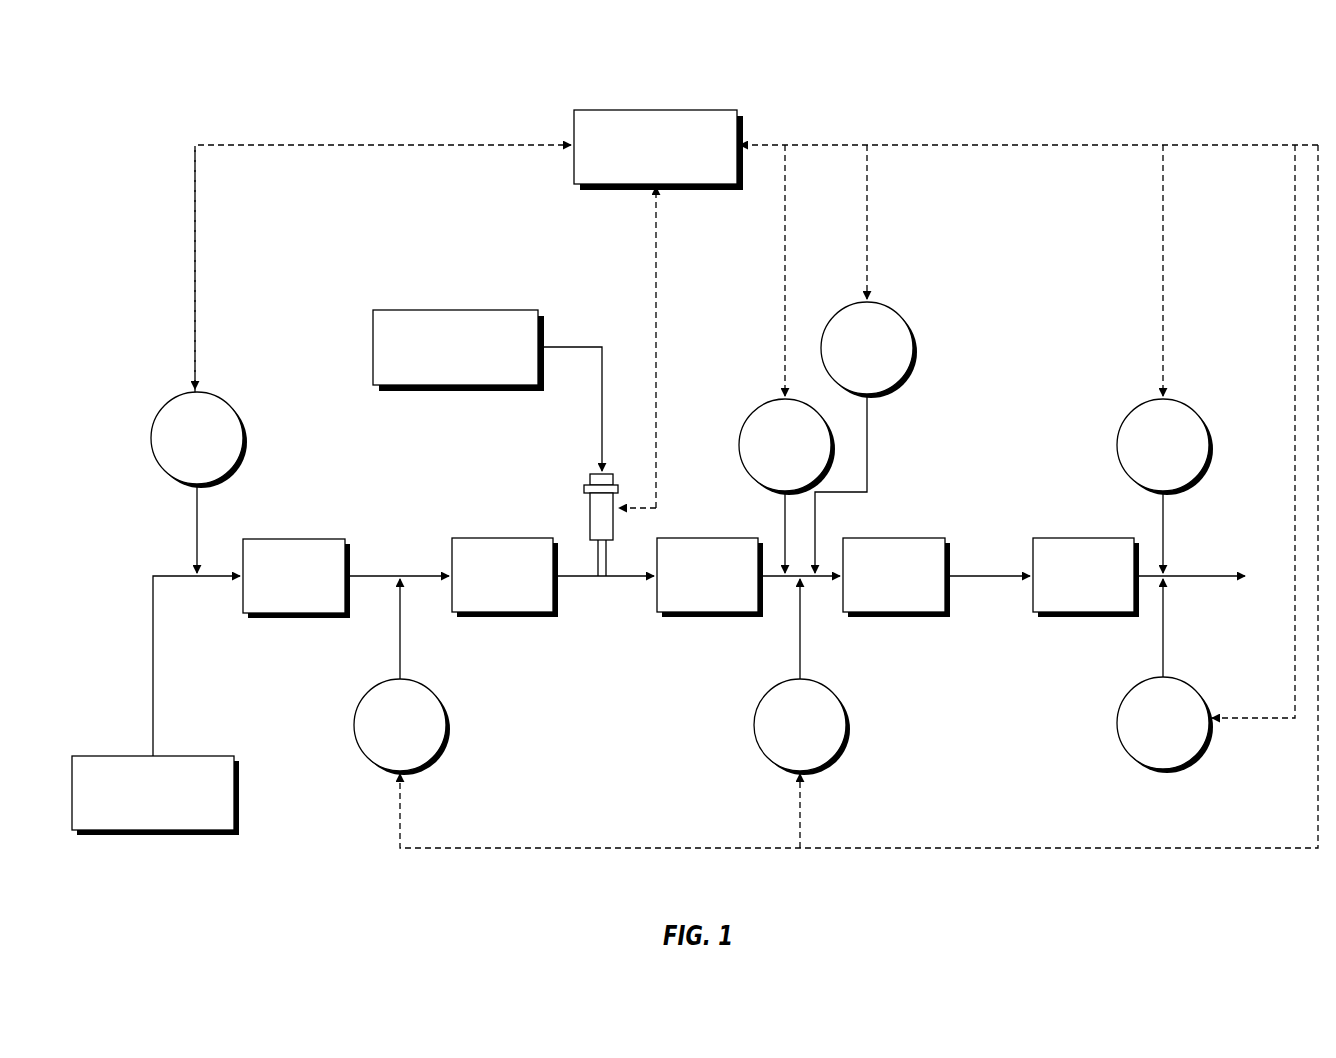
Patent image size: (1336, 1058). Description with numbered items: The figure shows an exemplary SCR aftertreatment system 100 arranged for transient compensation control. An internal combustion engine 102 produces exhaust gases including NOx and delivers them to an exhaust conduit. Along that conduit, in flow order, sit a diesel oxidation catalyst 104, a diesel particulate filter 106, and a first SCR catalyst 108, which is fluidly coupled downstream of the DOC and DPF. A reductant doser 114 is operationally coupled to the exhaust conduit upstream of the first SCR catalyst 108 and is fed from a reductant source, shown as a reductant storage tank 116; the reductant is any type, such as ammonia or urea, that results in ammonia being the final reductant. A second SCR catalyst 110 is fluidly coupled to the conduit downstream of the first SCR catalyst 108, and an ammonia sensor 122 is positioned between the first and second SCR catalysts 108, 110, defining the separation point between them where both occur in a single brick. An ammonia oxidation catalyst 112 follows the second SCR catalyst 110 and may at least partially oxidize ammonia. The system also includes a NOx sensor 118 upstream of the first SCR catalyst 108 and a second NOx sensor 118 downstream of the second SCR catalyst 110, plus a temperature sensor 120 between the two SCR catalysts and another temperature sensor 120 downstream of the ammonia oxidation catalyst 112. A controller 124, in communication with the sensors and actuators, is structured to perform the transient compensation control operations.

The SCR aftertreatment system 100 is at (262, 80).
The internal combustion engine 102 is at (135, 756).
The diesel oxidation catalyst 104 is at (291, 539).
The diesel particulate filter 106 is at (501, 538).
The first SCR catalyst 108 is at (657, 595).
The second SCR catalyst 110 is at (921, 538).
The ammonia oxidation catalyst 112 is at (1081, 538).
The reductant doser 114 is at (590, 512).
The reductant storage tank 116 is at (373, 350).
The NOx sensor 118 is at (152, 438).
The temperature sensor 120 is at (756, 722).
The ammonia sensor 122 is at (752, 410).
The controller 124 is at (574, 168).